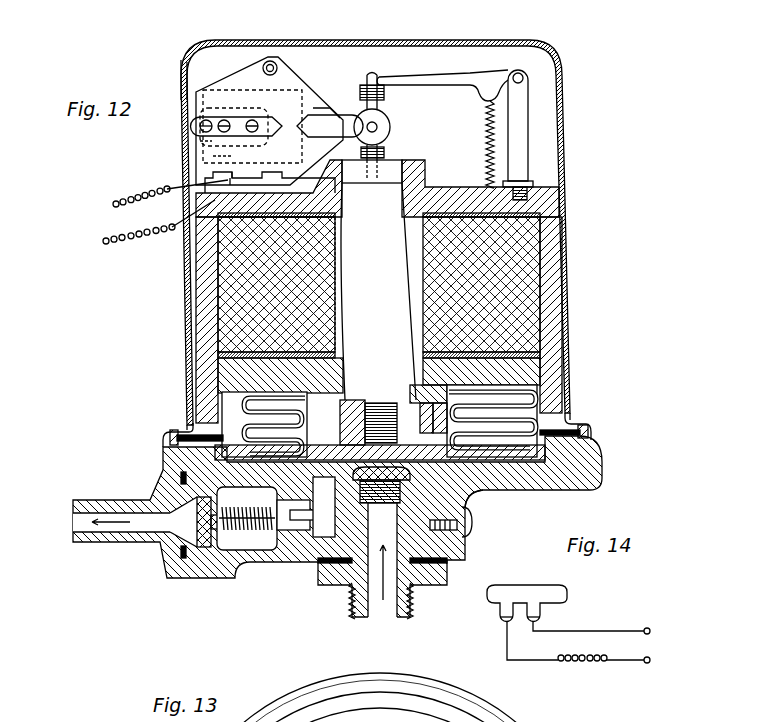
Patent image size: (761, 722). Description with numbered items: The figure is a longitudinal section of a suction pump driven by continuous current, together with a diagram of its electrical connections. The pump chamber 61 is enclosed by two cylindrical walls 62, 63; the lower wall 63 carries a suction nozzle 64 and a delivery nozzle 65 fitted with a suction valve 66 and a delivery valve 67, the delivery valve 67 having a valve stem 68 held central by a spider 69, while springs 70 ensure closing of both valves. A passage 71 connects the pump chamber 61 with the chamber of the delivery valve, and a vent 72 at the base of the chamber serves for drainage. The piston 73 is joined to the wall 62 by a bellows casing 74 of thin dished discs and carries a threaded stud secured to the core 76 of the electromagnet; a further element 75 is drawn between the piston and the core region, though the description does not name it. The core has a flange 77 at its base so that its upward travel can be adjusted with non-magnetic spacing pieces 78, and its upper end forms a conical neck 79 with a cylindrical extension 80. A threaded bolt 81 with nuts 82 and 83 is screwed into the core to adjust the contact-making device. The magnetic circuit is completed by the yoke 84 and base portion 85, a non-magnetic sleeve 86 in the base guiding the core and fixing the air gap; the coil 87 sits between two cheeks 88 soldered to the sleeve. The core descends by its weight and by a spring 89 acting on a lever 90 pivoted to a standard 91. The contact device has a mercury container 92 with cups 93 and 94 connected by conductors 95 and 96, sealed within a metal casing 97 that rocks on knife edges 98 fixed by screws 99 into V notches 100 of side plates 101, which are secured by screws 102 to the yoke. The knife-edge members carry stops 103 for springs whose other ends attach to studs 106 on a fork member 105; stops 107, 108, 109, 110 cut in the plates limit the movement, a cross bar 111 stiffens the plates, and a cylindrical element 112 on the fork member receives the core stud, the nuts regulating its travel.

In FIG. 12, the pump chamber 61 is at (330, 458).
In FIG. 12, the cylindrical wall 62 is at (225, 388).
In FIG. 12, the cylindrical wall 63 is at (165, 452).
In FIG. 12, the suction nozzle 64 is at (378, 604).
In FIG. 12, the delivery nozzle 65 is at (88, 527).
In FIG. 12, the suction valve 66 is at (470, 494).
In FIG. 12, the delivery valve 67 is at (283, 527).
In FIG. 12, the valve stem 68 is at (198, 517).
In FIG. 12, the spider 69 is at (207, 530).
In FIG. 12, the springs 70 is at (252, 520).
In FIG. 12, the passage 71 is at (292, 468).
In FIG. 12, the vent 72 is at (470, 530).
In FIG. 12, the piston 73 is at (430, 432).
In FIG. 12, the bellows casing 74 is at (515, 418).
In FIG. 12, the return spring 75 is at (365, 415).
In FIG. 12, the core 76 is at (378, 291).
In FIG. 12, the flange 77 is at (446, 433).
In FIG. 12, the spacing pieces 78 is at (302, 408).
In FIG. 12, the conical neck 79 is at (410, 194).
In FIG. 12, the cylindrical extension 80 is at (372, 171).
In FIG. 12, the screw threaded bolt 81 is at (386, 109).
In FIG. 12, the nut 82 is at (384, 93).
In FIG. 12, the nut 83 is at (384, 153).
In FIG. 12, the yoke 84 is at (200, 314).
In FIG. 12, the base portion 85 is at (528, 364).
In FIG. 12, the sleeve 86 is at (340, 367).
In FIG. 12, the coil 87 is at (379, 284).
In FIG. 14, the coil 87 is at (586, 664).
In FIG. 12, the cheeks 88 is at (218, 216).
In FIG. 12, the spring 89 is at (489, 152).
In FIG. 12, the lever 90 is at (441, 70).
In FIG. 12, the standard 91 is at (526, 137).
In FIG. 14, the container 92 is at (520, 592).
In FIG. 12, the cup 93 is at (230, 185).
In FIG. 14, the cup 93 is at (501, 618).
In FIG. 12, the cup 94 is at (282, 222).
In FIG. 14, the cup 94 is at (541, 618).
In FIG. 12, the conductor 95 is at (113, 206).
In FIG. 14, the conductor 95 is at (507, 649).
In FIG. 12, the conductor 96 is at (105, 242).
In FIG. 14, the conductor 96 is at (610, 630).
In FIG. 12, the metal casing 97 is at (183, 75).
In FIG. 12, the knife edges 98 is at (237, 124).
In FIG. 12, the screws 99 is at (222, 156).
In FIG. 12, the V notches 100 is at (376, 110).
In FIG. 12, the side plates 101 is at (284, 72).
In FIG. 12, the screws 102 is at (336, 241).
In FIG. 12, the stops 103 is at (200, 141).
In FIG. 12, the fork member 105 is at (335, 114).
In FIG. 12, the studs 106 is at (391, 127).
In FIG. 12, the stop 107 is at (232, 178).
In FIG. 12, the stop 108 is at (199, 123).
In FIG. 12, the stop 109 is at (342, 117).
In FIG. 12, the stop 110 is at (341, 185).
In FIG. 12, the cross bar 111 is at (269, 60).
In FIG. 12, the cylindrical element 112 is at (381, 147).